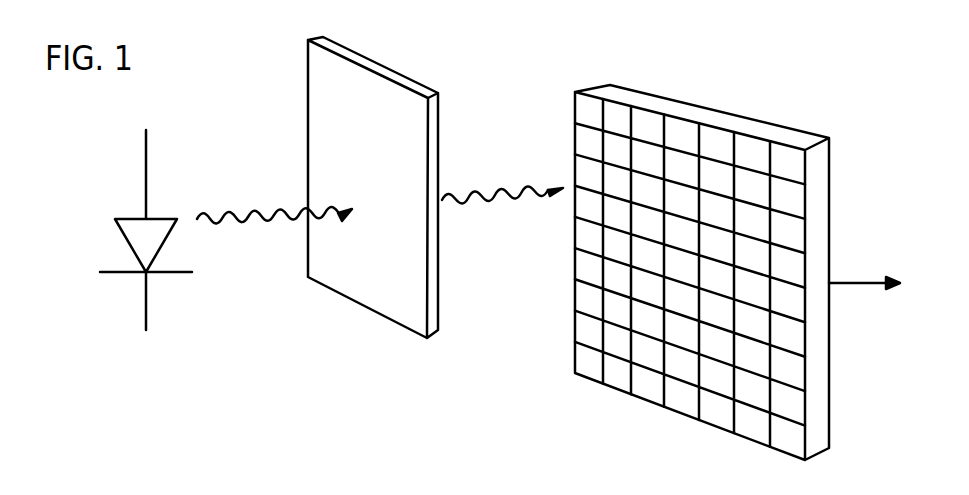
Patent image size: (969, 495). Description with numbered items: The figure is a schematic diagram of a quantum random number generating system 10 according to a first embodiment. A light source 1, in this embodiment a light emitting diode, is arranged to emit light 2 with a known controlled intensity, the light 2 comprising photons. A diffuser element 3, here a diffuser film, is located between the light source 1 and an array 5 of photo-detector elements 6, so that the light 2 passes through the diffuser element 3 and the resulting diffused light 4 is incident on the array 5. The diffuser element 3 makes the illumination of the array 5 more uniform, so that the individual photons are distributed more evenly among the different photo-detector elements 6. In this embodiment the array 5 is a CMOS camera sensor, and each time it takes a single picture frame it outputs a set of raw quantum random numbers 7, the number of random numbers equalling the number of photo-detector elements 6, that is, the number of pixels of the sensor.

The light source 1 is at (125, 233).
The light 2 is at (247, 216).
The diffuser element 3 is at (428, 337).
The diffused light 4 is at (500, 197).
The array of photo-detector elements 5 is at (702, 273).
The photo-detector elements 6 is at (682, 402).
The raw quantum random numbers 7 is at (879, 282).
The quantum random number generating system 10 is at (307, 343).